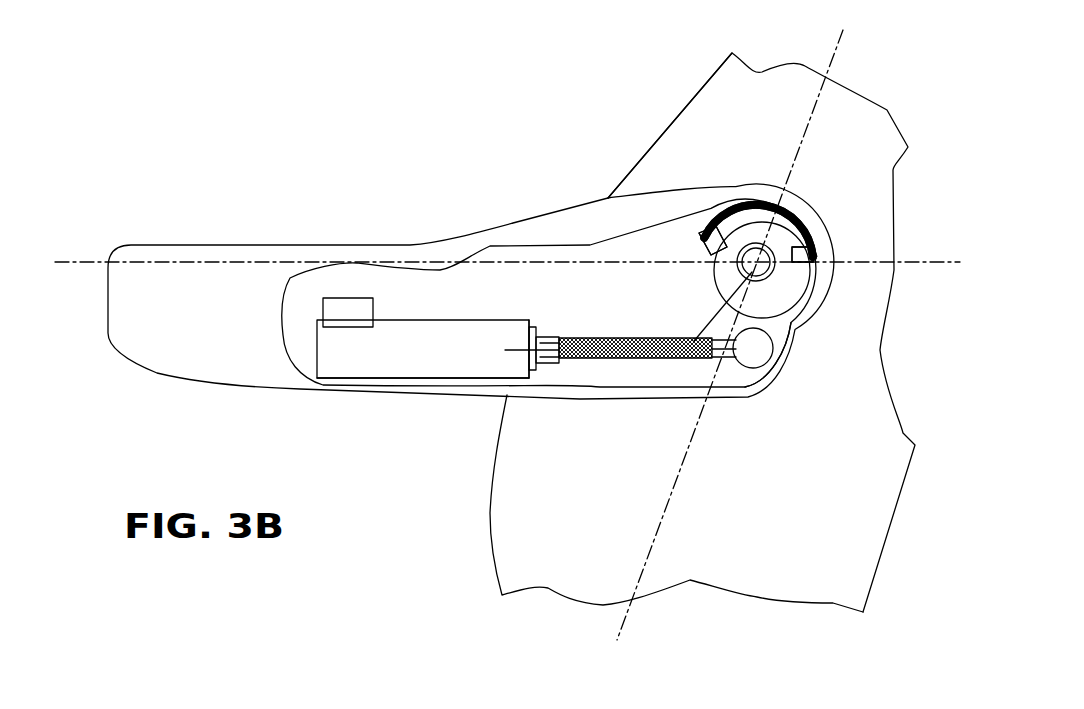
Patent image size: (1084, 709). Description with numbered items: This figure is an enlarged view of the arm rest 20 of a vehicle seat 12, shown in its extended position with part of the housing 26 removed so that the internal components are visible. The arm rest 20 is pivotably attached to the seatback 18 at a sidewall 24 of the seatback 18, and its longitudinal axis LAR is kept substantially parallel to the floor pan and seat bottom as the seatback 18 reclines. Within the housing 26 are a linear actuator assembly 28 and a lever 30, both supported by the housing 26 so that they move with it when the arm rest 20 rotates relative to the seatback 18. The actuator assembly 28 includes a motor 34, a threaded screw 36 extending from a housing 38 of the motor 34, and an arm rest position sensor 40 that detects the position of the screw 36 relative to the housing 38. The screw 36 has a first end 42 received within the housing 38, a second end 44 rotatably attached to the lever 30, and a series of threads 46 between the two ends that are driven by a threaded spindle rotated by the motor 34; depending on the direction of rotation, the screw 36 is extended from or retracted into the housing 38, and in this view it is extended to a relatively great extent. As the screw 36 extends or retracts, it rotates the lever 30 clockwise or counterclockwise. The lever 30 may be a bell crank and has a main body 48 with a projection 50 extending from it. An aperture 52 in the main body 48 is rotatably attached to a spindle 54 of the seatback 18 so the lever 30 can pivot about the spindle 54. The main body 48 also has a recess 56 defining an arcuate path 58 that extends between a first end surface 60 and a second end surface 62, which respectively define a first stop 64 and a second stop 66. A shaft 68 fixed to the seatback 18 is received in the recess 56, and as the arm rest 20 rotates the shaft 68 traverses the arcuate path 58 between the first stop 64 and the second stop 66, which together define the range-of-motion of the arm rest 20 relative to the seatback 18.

The seat 12 is at (693, 77).
The seatback 18 is at (678, 135).
The arm rest 20 is at (157, 238).
The sidewall 24 is at (512, 518).
The housing 26 is at (226, 243).
The linear actuator assembly 28 is at (404, 312).
The lever 30 is at (757, 264).
The motor 34 is at (384, 353).
The threaded screw 36 is at (600, 357).
The housing of the motor 38 is at (440, 360).
The arm rest position sensor 40 is at (340, 312).
The first end 42 is at (492, 350).
The second end 44 is at (753, 348).
The threads 46 is at (628, 338).
The main body 48 is at (813, 276).
The projection 50 is at (783, 337).
The aperture 52 is at (752, 273).
The spindle 54 is at (785, 320).
The recess 56 is at (777, 215).
The arcuate path 58 is at (758, 231).
The first end surface 60 is at (822, 262).
The second end surface 62 is at (708, 236).
The first stop 64 is at (815, 248).
The second stop 66 is at (722, 238).
The shaft 68 is at (805, 225).
The longitudinal axis of the arm rest LAR is at (70, 258).